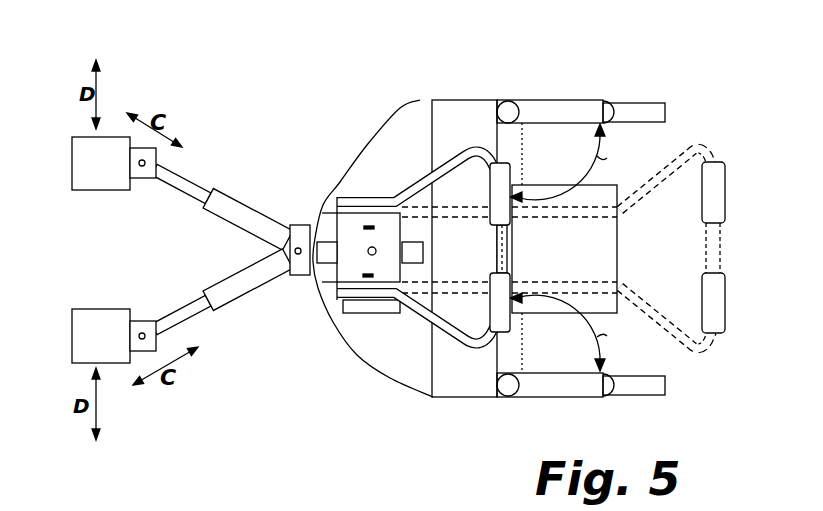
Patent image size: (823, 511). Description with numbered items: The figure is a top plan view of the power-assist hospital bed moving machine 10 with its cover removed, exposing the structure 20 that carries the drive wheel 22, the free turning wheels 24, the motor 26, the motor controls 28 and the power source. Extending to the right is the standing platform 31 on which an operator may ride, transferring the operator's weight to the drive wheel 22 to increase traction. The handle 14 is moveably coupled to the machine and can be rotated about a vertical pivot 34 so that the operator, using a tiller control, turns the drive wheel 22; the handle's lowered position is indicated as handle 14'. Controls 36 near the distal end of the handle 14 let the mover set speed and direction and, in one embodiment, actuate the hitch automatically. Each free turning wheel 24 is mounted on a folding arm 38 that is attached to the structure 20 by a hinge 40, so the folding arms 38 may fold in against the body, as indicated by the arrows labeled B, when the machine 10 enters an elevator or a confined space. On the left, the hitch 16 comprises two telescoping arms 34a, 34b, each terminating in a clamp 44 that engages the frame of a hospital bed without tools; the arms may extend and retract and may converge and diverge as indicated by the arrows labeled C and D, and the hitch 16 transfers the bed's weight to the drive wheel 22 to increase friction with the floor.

The machine 10 is at (250, 27).
The handle 14 is at (500, 193).
The handle in lowered position 14' is at (688, 331).
The hitch 16 is at (193, 273).
The structure 20 is at (400, 124).
The drive wheel 22 is at (326, 243).
The free turning wheel 24 is at (644, 103).
The motor 26 is at (350, 312).
The motor controls 28 is at (340, 300).
The standing platform 31 is at (600, 232).
The vertical pivot 34 is at (372, 247).
The telescoping arm 34a is at (200, 313).
The telescoping arm 34b is at (232, 197).
The controls 36 is at (725, 192).
The folding arm 38 is at (558, 108).
The hinge 40 is at (505, 397).
The clamp 44 is at (115, 191).